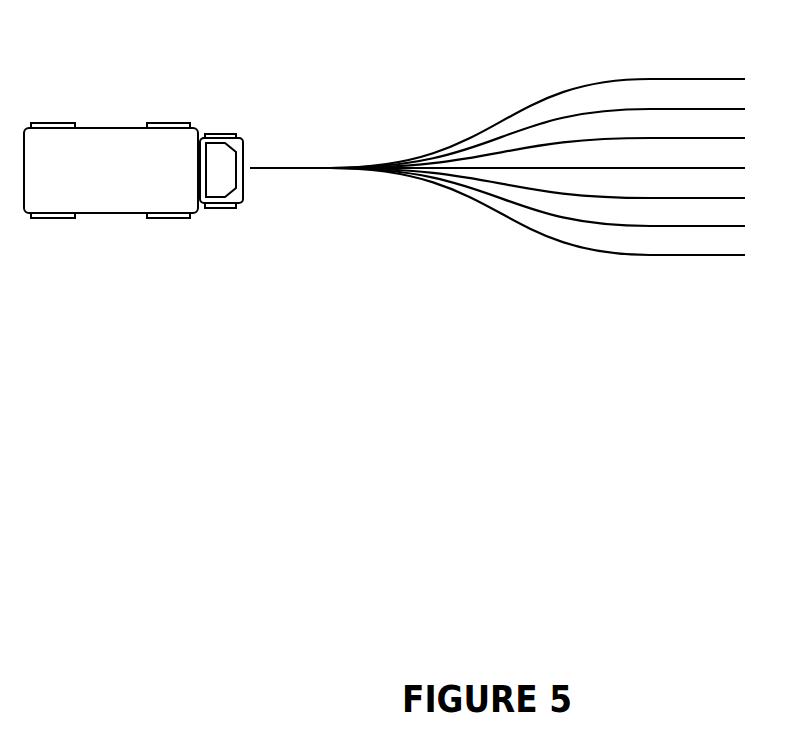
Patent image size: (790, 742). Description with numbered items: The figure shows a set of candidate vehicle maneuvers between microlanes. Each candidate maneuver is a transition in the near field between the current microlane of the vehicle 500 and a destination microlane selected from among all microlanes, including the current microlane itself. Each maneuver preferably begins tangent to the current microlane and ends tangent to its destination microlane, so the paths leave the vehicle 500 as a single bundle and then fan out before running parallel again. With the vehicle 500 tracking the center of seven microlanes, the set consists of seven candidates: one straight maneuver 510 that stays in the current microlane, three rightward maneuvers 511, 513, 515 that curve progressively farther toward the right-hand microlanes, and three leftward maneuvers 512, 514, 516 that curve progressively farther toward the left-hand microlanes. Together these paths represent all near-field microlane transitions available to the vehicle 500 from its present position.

The vehicle 500 is at (113, 120).
The straight maneuver 510 is at (555, 173).
The rightward maneuver 511 is at (620, 198).
The leftward maneuver 512 is at (619, 138).
The rightward maneuver 513 is at (620, 226).
The leftward maneuver 514 is at (619, 109).
The rightward maneuver 515 is at (620, 255).
The leftward maneuver 516 is at (619, 79).